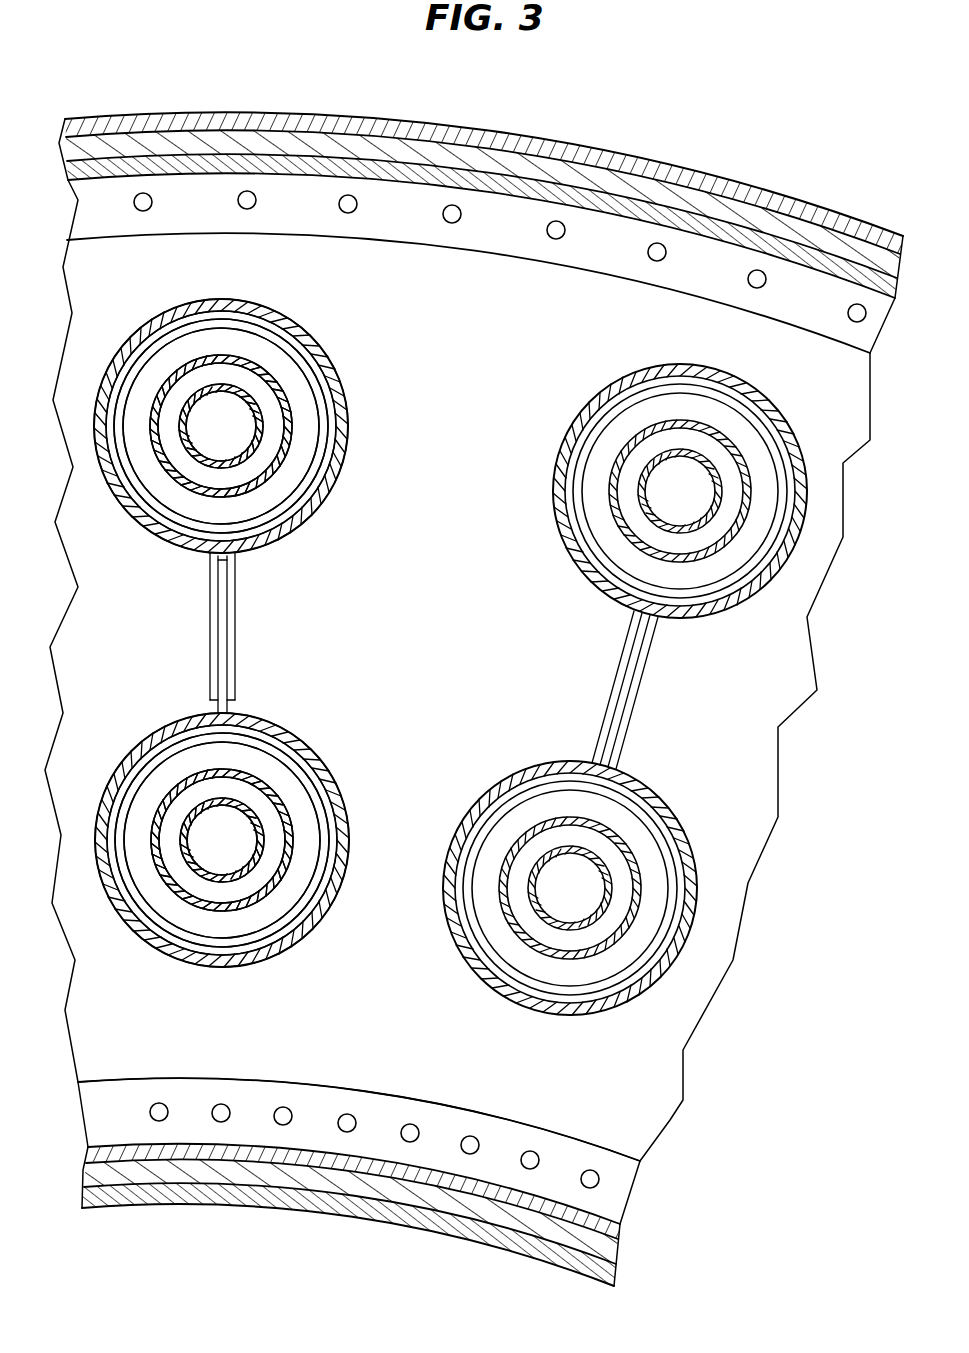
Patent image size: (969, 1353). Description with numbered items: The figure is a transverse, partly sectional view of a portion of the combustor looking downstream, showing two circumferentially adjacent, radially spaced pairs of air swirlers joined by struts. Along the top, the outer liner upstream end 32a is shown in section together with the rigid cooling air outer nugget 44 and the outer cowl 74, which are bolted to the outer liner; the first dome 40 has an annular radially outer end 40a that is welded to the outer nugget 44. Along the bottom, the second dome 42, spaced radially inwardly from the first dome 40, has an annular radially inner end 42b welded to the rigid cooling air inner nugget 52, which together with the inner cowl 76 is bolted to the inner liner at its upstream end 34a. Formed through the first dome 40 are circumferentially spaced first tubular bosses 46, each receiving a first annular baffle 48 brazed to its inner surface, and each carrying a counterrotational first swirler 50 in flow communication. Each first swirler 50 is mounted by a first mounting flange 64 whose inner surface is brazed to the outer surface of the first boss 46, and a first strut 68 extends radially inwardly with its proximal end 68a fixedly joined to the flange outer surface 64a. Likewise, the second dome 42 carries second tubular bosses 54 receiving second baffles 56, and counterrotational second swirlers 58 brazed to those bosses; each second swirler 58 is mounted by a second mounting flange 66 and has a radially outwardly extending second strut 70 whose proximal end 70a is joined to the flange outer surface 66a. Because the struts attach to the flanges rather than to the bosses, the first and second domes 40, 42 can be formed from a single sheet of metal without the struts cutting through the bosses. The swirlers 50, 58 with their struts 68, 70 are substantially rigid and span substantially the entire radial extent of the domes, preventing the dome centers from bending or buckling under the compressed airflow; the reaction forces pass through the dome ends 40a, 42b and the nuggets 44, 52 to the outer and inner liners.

The outer cowl 74 is at (125, 130).
The outer liner upstream end 32a is at (157, 142).
The cooling air outer nugget 44 is at (246, 158).
The first dome 40 is at (76, 366).
The first dome radially outer end 40a is at (95, 270).
The first swirler 50 is at (262, 294).
The first tubular boss 46 is at (315, 362).
The first annular baffle 48 is at (330, 410).
The first mounting flange outer surface 64a is at (345, 498).
The first mounting flange 64 is at (120, 522).
The first strut 68 is at (204, 618).
The first strut proximal end 68a is at (237, 565).
The second strut 70 is at (215, 665).
The second strut proximal end 70a is at (235, 701).
The second mounting flange 66 is at (160, 720).
The second mounting flange outer surface 66a is at (290, 737).
The second tubular boss 54 is at (122, 778).
The second swirler 58 is at (92, 834).
The second baffle 56 is at (148, 914).
The second dome 42 is at (84, 1010).
The second dome radially inner end 42b is at (120, 1046).
The cooling air inner nugget 52 is at (622, 1236).
The inner liner upstream end 34a is at (622, 1258).
The inner cowl 76 is at (617, 1276).